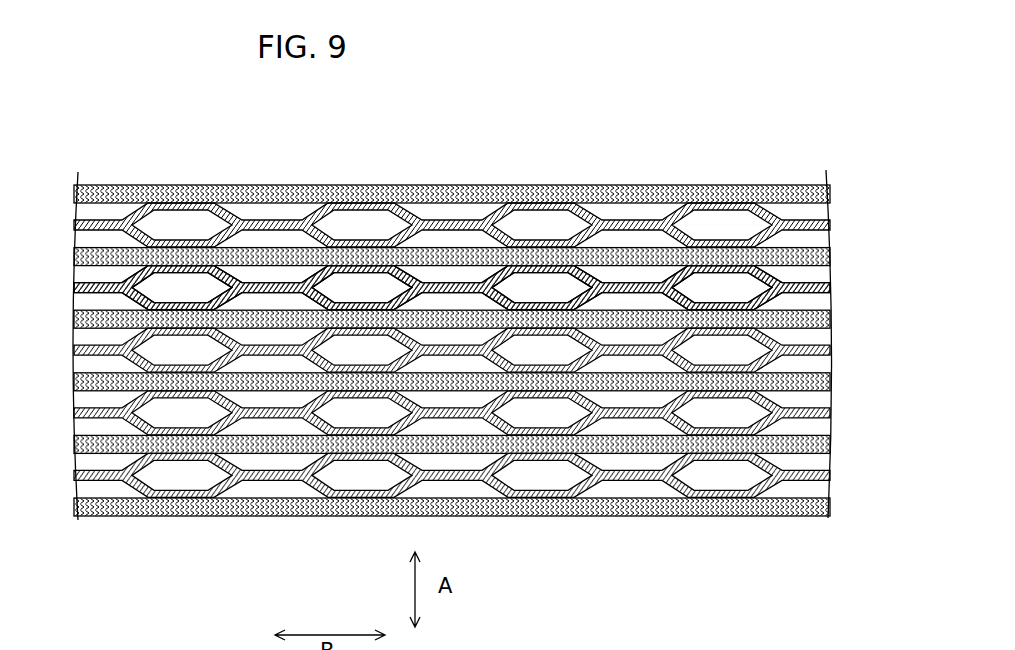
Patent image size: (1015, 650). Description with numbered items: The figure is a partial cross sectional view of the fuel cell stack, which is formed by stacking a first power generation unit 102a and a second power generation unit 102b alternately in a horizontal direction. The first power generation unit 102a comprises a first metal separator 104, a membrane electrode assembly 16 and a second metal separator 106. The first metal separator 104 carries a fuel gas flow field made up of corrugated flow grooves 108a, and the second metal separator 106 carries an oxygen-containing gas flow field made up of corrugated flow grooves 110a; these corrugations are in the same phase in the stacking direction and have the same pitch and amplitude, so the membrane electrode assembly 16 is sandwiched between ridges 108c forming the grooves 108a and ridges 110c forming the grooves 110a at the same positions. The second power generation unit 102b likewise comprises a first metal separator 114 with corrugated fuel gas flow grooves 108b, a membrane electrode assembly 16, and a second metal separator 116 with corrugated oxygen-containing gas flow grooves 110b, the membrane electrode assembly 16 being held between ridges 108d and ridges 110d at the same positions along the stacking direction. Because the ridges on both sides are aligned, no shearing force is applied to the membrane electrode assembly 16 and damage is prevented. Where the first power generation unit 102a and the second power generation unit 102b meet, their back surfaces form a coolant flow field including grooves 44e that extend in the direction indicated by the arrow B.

The membrane electrode assembly 16 is at (845, 267).
The grooves 44e is at (700, 228).
The first power generation unit 102a is at (522, 256).
The second power generation unit 102b is at (522, 319).
The first metal separator 104 is at (812, 284).
The second metal separator 106 is at (811, 240).
The first metal separator 114 is at (812, 352).
The second metal separator 116 is at (808, 307).
The corrugated flow grooves 108a is at (627, 272).
The corrugated flow grooves 108b is at (636, 337).
The ridges 108c is at (382, 272).
The ridges 108d is at (537, 333).
The corrugated flow grooves 110a is at (622, 243).
The corrugated flow grooves 110b is at (645, 302).
The ridges 110c is at (540, 246).
The ridges 110d is at (540, 308).